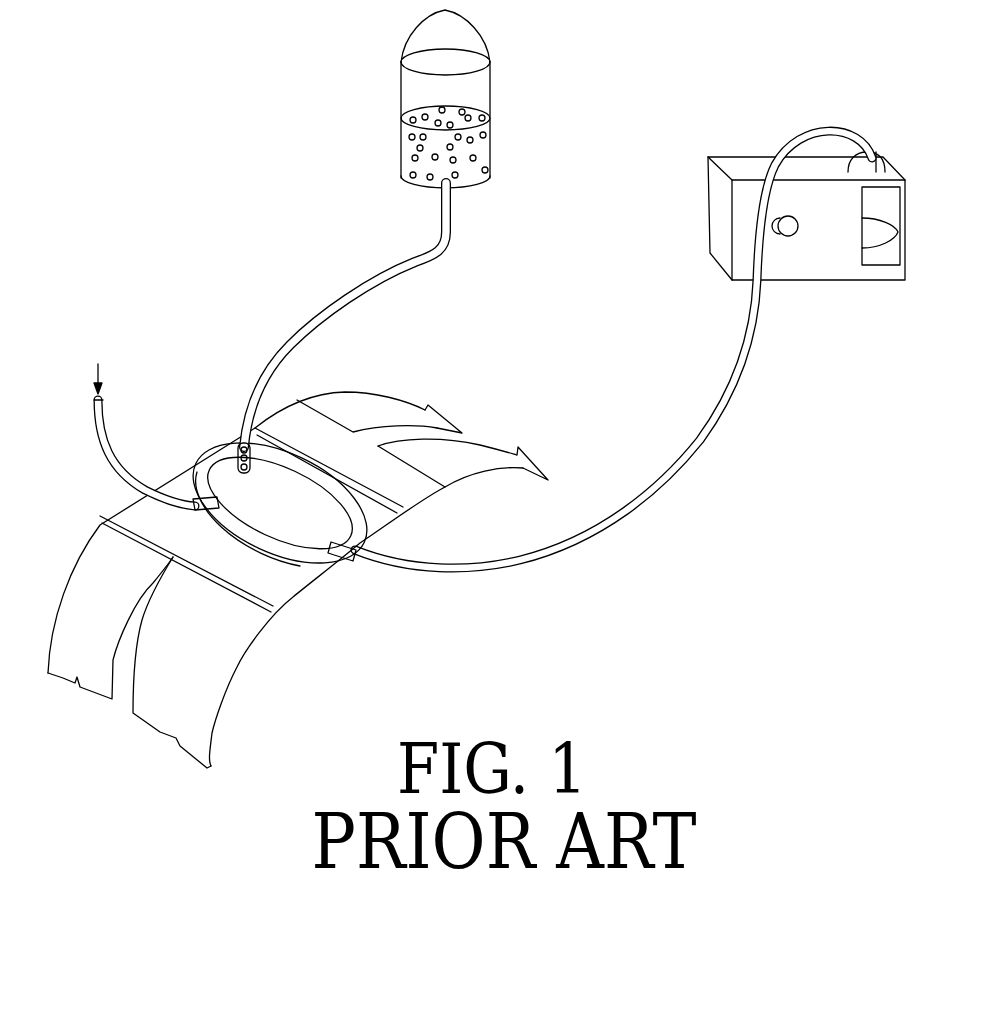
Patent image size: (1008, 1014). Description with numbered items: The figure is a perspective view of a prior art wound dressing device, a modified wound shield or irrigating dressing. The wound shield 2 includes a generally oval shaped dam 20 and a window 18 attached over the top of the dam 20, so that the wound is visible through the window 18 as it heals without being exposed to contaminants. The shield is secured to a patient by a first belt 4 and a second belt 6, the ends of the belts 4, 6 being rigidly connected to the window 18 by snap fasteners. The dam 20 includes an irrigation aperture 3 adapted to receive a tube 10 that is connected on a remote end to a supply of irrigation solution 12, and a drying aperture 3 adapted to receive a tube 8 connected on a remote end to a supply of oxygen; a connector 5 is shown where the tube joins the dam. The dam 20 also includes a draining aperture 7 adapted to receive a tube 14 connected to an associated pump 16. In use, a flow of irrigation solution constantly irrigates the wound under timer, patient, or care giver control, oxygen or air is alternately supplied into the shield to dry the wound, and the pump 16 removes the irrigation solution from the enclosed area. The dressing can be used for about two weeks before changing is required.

The wound shield 2 is at (280, 475).
The irrigation aperture 3 is at (183, 493).
The first belt 4 is at (80, 591).
The tube connector 5 is at (238, 443).
The second belt 6 is at (200, 670).
The draining aperture 7 is at (360, 548).
The tube 8 is at (110, 460).
The tube 10 is at (366, 283).
The supply of irrigation solution 12 is at (492, 98).
The tube 14 is at (632, 496).
The pump 16 is at (762, 148).
The window 18 is at (297, 513).
The dam 20 is at (312, 552).